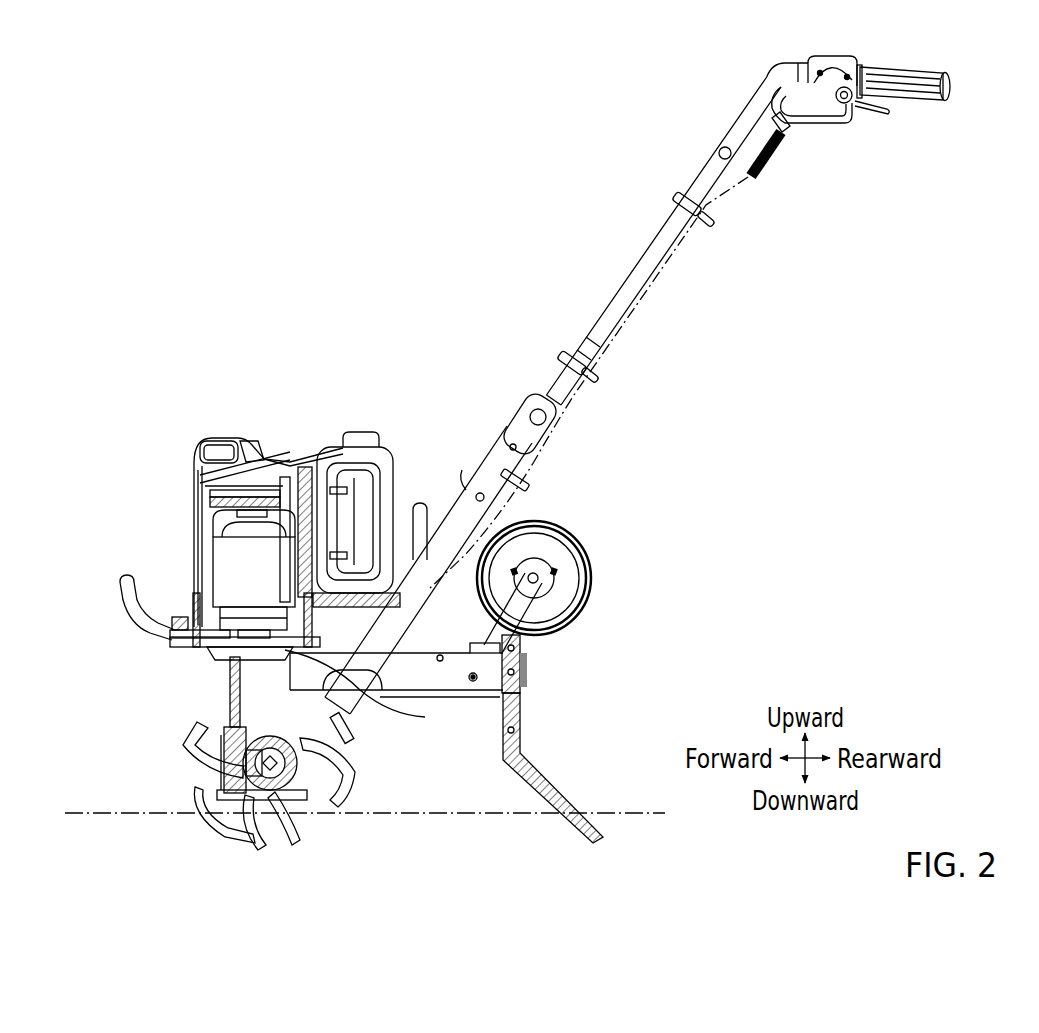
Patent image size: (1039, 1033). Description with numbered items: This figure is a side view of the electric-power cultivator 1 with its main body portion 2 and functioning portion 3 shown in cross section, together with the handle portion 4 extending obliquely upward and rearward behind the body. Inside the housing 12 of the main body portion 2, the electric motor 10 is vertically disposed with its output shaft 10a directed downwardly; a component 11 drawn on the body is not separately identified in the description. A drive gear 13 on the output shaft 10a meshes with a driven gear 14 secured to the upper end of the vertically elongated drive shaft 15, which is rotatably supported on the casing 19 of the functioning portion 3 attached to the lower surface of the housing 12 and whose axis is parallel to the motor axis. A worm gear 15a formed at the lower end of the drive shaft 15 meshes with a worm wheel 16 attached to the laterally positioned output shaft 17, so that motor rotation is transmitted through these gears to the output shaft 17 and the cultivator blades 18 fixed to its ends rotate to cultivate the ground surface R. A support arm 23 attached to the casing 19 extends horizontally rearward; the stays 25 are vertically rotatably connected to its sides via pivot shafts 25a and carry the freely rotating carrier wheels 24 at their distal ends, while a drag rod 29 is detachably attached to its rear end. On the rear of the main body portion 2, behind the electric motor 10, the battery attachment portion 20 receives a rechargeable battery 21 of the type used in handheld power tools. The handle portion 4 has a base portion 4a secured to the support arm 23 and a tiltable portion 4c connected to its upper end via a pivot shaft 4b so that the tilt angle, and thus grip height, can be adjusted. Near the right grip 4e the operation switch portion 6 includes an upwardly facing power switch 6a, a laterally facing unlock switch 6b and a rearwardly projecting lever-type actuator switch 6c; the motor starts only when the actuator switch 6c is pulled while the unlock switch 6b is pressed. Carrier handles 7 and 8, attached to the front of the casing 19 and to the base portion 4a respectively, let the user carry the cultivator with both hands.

The electric-power cultivator 1 is at (289, 290).
The main body portion 2 is at (192, 453).
The functioning portion 3 is at (170, 743).
The handle portion 4 is at (622, 268).
The base portion 4a is at (443, 550).
The pivot shaft 4b is at (515, 433).
The tiltable portion 4c is at (623, 305).
The right grip 4e is at (900, 70).
The operation switch portion 6 is at (820, 103).
The power switch 6a is at (837, 62).
The unlock switch 6b is at (848, 105).
The actuator switch 6c is at (888, 110).
The carrier handle 7 is at (127, 600).
The carrier handle 8 is at (423, 503).
The electric motor 10 is at (192, 553).
The output shaft 10a is at (230, 677).
The engine cover 11 is at (283, 457).
The housing 12 is at (233, 570).
The drive gear 13 is at (367, 693).
The driven gear 14 is at (217, 648).
The drive shaft 15 is at (223, 713).
The worm gear 15a is at (227, 753).
The worm wheel 16 is at (310, 772).
The output shaft 17 is at (288, 813).
The cultivator blades 18 is at (350, 790).
The casing 19 is at (343, 725).
The battery attachment portion 20 is at (393, 500).
The battery 21 is at (350, 513).
The support arm 23 is at (400, 677).
The carrier wheels 24 is at (573, 543).
The stays 25 is at (517, 610).
The pivot shafts 25a is at (480, 677).
The drag rod 29 is at (560, 788).
The ground surface R is at (117, 813).